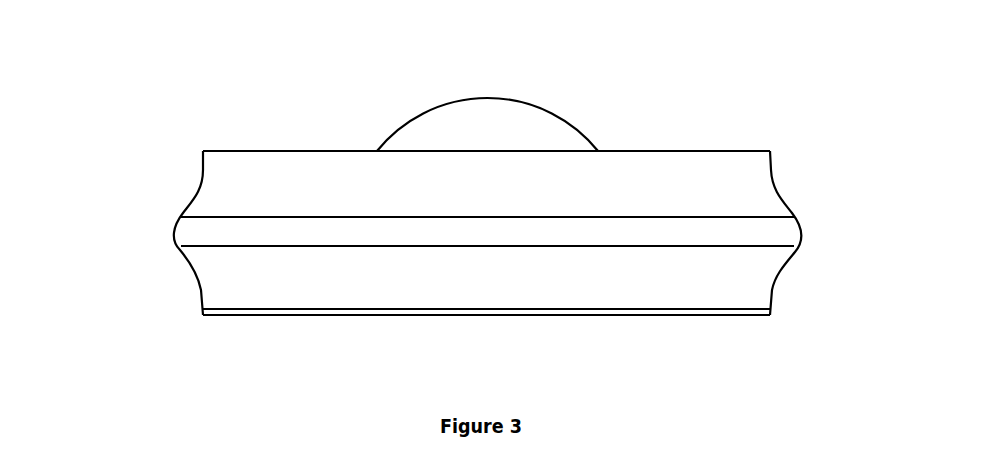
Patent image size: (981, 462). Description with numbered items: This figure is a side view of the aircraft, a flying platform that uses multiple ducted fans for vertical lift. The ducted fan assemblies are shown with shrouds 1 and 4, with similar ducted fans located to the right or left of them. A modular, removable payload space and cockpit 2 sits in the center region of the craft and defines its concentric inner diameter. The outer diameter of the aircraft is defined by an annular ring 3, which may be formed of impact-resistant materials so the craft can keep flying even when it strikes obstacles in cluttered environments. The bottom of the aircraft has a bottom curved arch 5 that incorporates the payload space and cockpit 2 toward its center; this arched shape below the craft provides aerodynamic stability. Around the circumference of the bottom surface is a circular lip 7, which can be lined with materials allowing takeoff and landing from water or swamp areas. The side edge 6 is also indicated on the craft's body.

The shroud 1 is at (253, 143).
The payload space and cockpit 2 is at (537, 100).
The annular ring 3 is at (163, 231).
The shroud 4 is at (733, 135).
The bottom curved arch 5 is at (233, 315).
The side edge 6 is at (755, 193).
The circular lip 7 is at (580, 315).